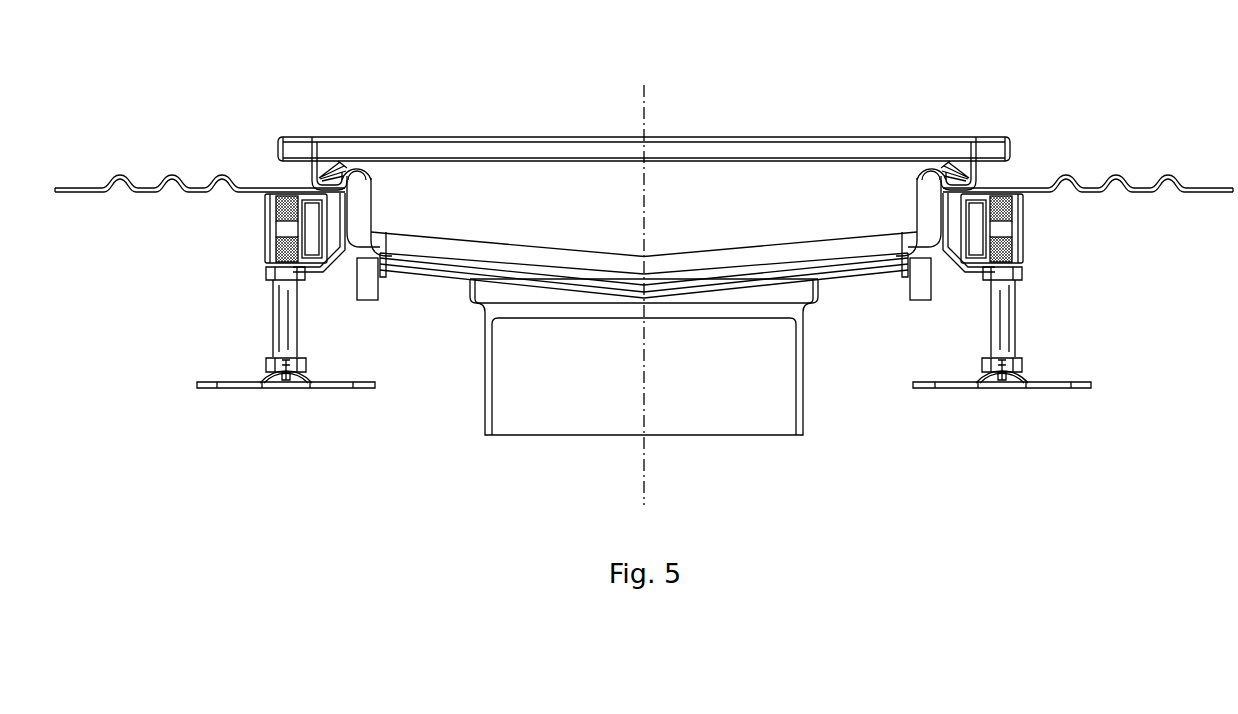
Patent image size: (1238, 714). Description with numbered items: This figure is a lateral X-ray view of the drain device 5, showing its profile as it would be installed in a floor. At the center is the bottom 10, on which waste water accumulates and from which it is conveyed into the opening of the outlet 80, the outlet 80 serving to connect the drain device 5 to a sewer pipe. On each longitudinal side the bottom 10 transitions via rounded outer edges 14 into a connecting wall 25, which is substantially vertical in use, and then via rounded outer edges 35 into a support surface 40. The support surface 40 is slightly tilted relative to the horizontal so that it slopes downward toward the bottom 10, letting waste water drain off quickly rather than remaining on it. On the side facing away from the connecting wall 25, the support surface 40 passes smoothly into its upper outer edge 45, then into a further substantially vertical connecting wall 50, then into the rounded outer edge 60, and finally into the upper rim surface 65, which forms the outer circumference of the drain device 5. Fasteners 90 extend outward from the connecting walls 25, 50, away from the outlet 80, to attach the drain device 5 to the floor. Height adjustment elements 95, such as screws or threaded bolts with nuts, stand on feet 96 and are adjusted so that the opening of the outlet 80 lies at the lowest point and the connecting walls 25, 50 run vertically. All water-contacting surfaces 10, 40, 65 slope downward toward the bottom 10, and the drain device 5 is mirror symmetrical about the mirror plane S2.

The drain device 5 is at (233, 104).
The bottom 10 is at (697, 273).
The rounded outer edges 14 is at (360, 246).
The connecting wall 25 is at (350, 223).
The outer edges 35 is at (367, 177).
The support surface 40 is at (357, 167).
The upper outer edge 45 is at (347, 172).
The connecting wall 50 is at (333, 164).
The rounded outer edge 60 is at (315, 150).
The upper rim surface 65 is at (309, 150).
The outlet 80 is at (806, 370).
The fasteners 90 is at (1140, 195).
The height adjustment elements 95 is at (1016, 324).
The feet 96 is at (1000, 392).
The mirror plane S2 is at (646, 500).